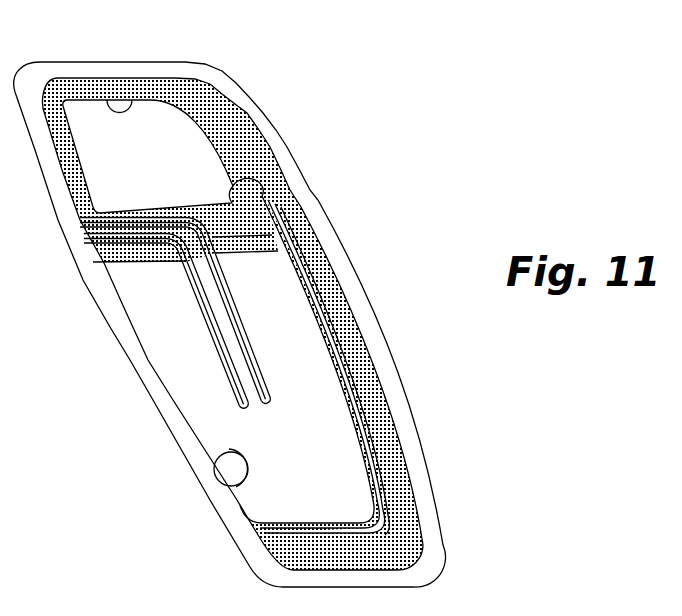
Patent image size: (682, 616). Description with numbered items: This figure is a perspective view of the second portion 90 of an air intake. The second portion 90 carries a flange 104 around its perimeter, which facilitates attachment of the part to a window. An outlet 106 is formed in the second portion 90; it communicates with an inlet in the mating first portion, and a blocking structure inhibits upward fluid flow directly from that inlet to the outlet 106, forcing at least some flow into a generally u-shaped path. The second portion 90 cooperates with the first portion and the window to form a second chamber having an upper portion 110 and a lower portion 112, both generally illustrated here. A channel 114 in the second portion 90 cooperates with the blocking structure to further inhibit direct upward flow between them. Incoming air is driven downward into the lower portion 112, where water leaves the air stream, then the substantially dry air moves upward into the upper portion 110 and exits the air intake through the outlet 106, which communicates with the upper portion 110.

The second portion 90 is at (250, 324).
The flange 104 is at (385, 332).
The outlet 106 is at (108, 105).
The upper portion 110 is at (250, 146).
The lower portion 112 is at (348, 447).
The channel 114 is at (247, 320).